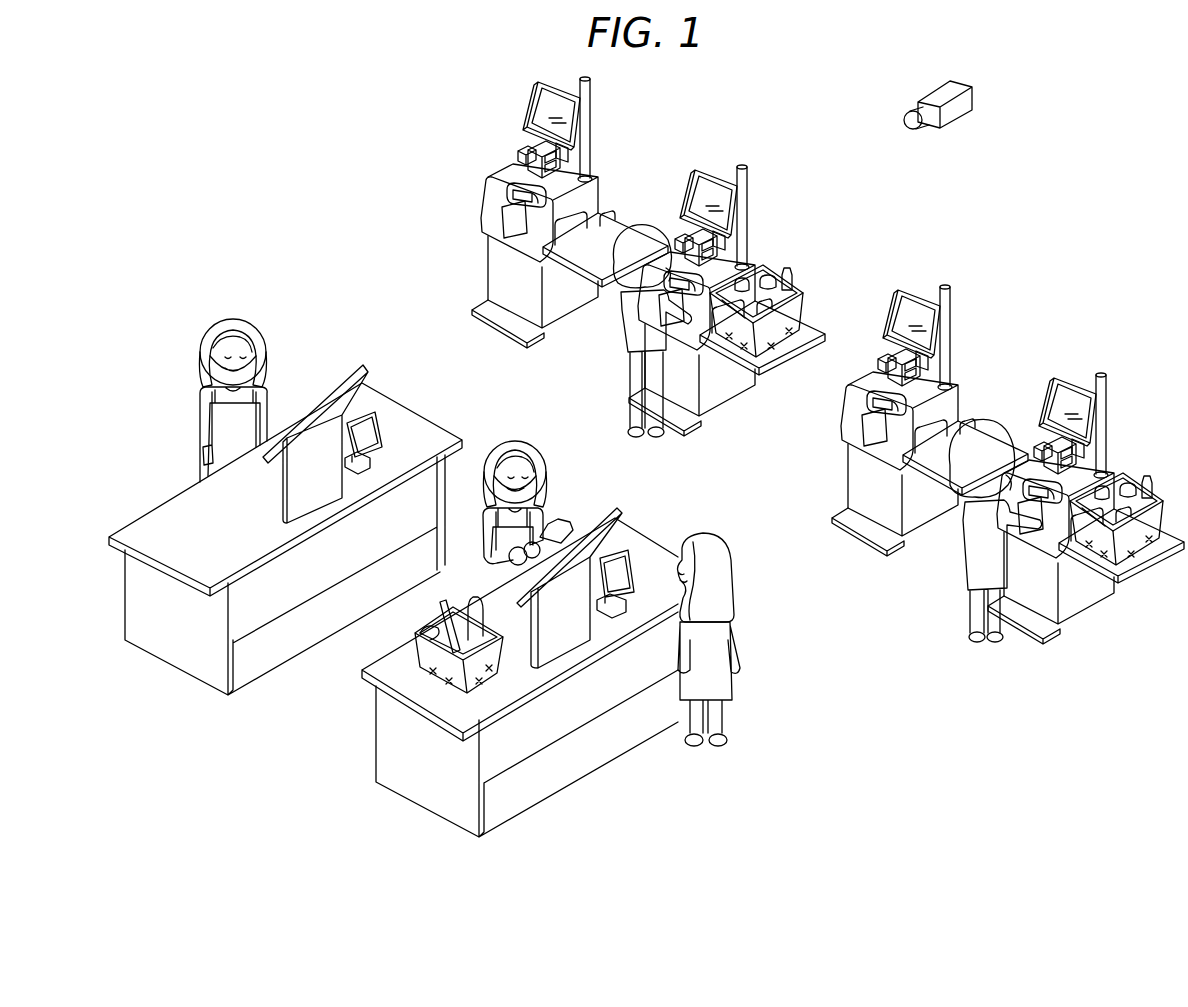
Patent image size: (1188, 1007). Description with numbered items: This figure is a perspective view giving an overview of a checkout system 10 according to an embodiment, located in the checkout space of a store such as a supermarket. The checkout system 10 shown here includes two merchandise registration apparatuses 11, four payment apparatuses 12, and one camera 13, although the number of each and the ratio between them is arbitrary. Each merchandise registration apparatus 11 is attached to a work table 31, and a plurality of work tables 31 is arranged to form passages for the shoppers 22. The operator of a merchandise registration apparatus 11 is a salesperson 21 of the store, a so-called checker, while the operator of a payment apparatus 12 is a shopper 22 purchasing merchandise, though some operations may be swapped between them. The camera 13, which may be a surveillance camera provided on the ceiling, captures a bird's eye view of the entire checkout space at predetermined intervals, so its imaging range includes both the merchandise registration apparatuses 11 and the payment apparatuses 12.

The checkout system 10 is at (335, 114).
The merchandise registration apparatus 11 is at (325, 353).
The payment apparatus 12 is at (630, 140).
The camera 13 is at (972, 99).
The salesperson 21 is at (202, 408).
The shopper 22 is at (633, 342).
The work table 31 is at (167, 507).